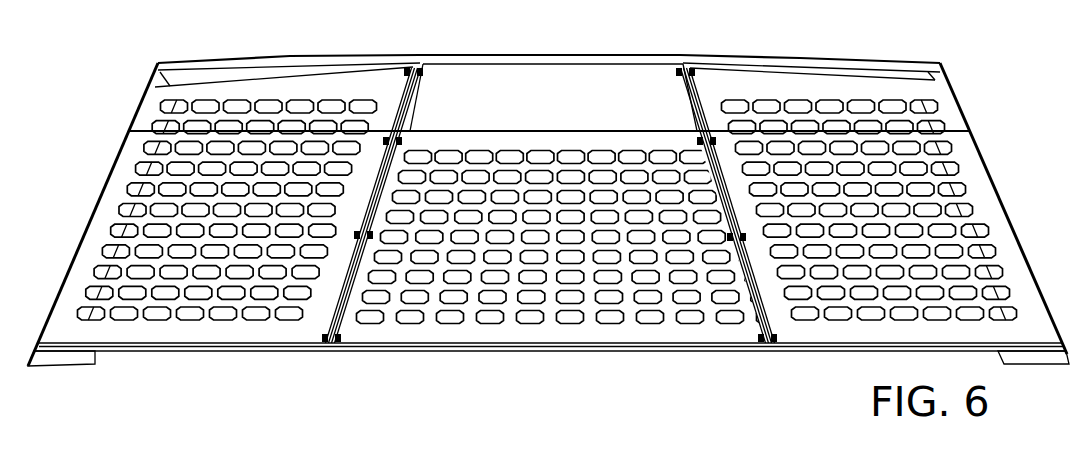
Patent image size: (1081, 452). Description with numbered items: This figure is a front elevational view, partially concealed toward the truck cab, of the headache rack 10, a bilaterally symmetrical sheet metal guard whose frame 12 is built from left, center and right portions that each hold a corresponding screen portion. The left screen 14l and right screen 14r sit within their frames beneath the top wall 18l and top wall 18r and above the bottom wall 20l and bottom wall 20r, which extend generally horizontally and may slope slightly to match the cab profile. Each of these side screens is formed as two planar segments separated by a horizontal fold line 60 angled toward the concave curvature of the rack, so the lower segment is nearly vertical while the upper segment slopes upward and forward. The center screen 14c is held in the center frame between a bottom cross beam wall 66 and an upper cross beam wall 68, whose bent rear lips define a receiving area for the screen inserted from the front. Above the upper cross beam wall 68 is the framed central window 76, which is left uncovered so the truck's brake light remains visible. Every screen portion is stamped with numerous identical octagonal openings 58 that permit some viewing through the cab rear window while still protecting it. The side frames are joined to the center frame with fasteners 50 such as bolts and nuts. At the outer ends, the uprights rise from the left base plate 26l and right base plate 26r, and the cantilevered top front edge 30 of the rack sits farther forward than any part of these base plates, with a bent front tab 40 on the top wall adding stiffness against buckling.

The headache rack 10 is at (975, 66).
The frame 12 is at (460, 62).
The right screen 14r is at (205, 333).
The center screen 14c is at (577, 333).
The left screen 14l is at (837, 333).
The top wall 18r is at (230, 65).
The top wall 18l is at (773, 60).
The bottom wall 20r is at (275, 354).
The bottom wall 20l is at (853, 353).
The right base plate 26r is at (65, 366).
The left base plate 26l is at (1013, 369).
The top front edge 30 is at (593, 55).
The front tab 40 is at (843, 63).
The fasteners 50 is at (723, 344).
The openings 58 is at (490, 324).
The horizontal fold line 60 is at (762, 132).
The bottom cross beam wall 66 is at (395, 353).
The upper cross beam wall 68 is at (442, 128).
The framed central window 76 is at (584, 105).